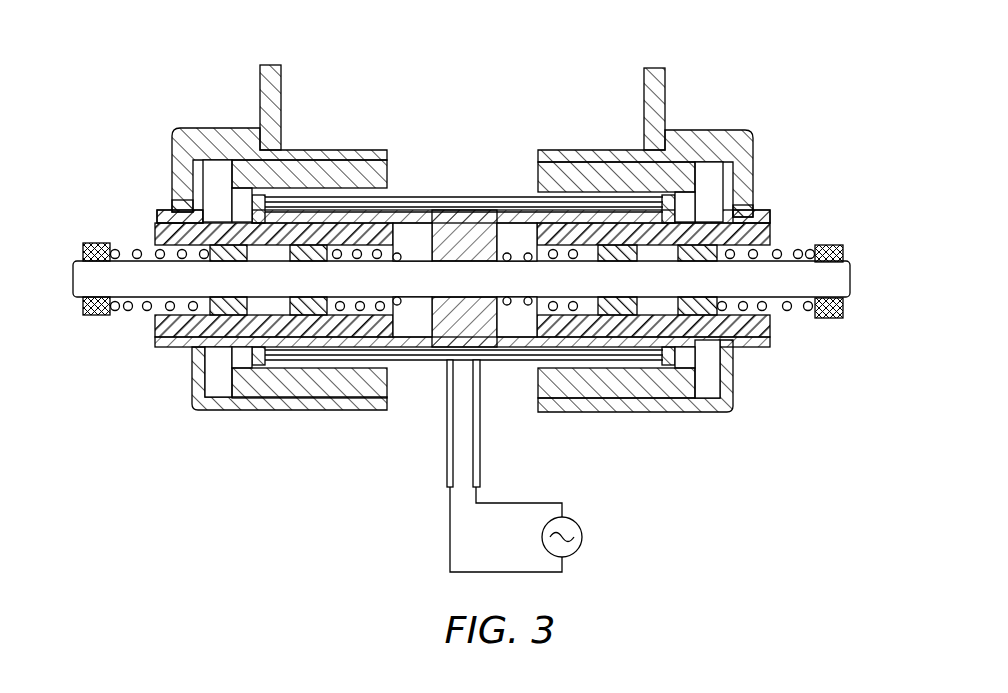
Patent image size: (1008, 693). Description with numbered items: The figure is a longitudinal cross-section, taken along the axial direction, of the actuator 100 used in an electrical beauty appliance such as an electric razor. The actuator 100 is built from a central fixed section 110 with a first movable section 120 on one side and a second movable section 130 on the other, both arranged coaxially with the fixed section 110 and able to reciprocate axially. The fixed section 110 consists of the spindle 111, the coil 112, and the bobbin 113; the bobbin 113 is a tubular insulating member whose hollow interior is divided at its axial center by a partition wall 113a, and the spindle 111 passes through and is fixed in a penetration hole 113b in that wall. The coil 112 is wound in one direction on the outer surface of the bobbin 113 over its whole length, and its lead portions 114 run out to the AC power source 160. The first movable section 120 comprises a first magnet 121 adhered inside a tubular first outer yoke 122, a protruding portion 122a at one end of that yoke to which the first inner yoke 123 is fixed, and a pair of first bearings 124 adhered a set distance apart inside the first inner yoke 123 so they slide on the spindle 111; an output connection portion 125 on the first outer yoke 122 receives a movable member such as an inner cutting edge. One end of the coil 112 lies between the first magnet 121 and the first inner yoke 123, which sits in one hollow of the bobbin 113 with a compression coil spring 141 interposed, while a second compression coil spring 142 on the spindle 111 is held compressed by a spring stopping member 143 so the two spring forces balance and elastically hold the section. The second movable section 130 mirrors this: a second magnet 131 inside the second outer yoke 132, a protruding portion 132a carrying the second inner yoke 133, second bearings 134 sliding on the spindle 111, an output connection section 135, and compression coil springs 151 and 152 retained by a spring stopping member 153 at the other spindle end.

The actuator 100 is at (305, 462).
The fixed section 110 is at (442, 187).
The spindle 111 is at (792, 278).
The coil 112 is at (458, 203).
The bobbin 113 is at (444, 298).
The partition wall 113a is at (478, 310).
The penetration hole 113b is at (448, 310).
The lead portions 114 is at (475, 443).
The first movable section 120 is at (590, 94).
The first magnet 121 is at (592, 168).
The first outer yoke 122 is at (548, 152).
The protruding portion 122a is at (747, 217).
The first inner yoke 123 is at (770, 217).
The first bearings 124 is at (621, 245).
The output connection portion 125 is at (658, 103).
The second movable section 130 is at (350, 92).
The second magnet 131 is at (330, 157).
The second outer yoke 132 is at (368, 155).
The protruding portion 132a is at (175, 213).
The second inner yoke 133 is at (155, 218).
The second bearings 134 is at (314, 250).
The output connection section 135 is at (280, 95).
The compression coil spring 141 is at (507, 254).
The compression coil spring 142 is at (778, 254).
The spring stopping member 143 is at (832, 245).
The compression coil spring 151 is at (397, 254).
The compression coil spring 152 is at (135, 250).
The spring stopping member 153 is at (83, 243).
The AC power source 160 is at (575, 518).